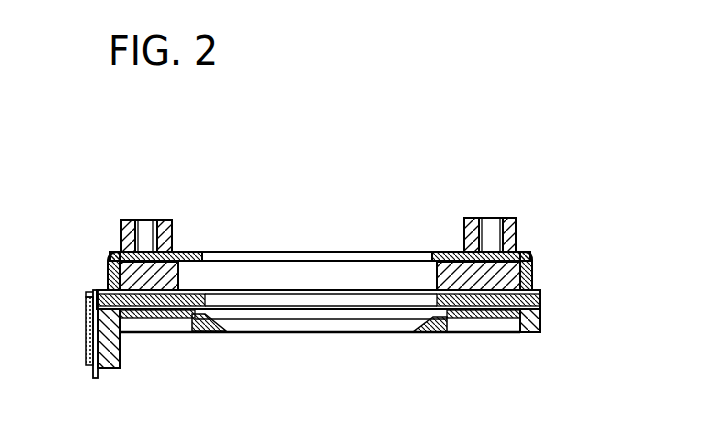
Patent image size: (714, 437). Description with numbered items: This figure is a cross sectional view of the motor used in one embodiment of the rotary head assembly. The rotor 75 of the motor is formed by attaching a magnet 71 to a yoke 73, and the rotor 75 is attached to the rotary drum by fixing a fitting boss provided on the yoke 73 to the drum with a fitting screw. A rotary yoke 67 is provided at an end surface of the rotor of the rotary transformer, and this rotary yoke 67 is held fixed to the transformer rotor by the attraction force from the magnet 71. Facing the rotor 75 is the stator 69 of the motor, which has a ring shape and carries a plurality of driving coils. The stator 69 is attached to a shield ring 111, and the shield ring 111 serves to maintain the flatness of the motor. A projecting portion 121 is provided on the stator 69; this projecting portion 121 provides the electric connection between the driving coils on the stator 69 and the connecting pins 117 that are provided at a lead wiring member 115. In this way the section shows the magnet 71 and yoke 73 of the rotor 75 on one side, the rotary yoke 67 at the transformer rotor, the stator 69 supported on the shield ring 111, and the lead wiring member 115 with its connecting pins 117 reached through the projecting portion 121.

The rotary yoke 67 is at (483, 334).
The stator of the motor 69 is at (541, 297).
The magnet 71 is at (448, 254).
The yoke 73 is at (533, 259).
The rotor of the motor 75 is at (531, 238).
The shield ring 111 is at (538, 323).
The lead wiring member 115 is at (87, 350).
The connecting pins 117 is at (95, 378).
The projecting portion 121 is at (88, 301).